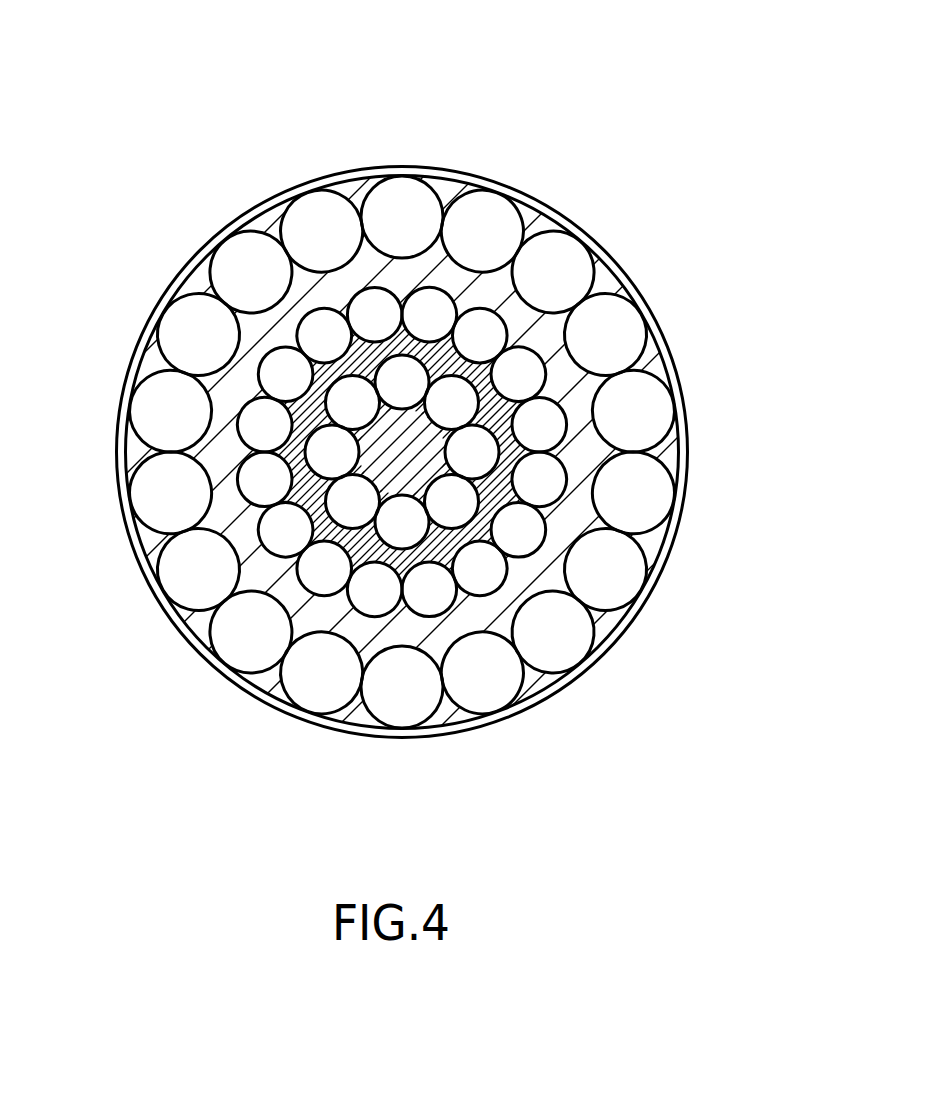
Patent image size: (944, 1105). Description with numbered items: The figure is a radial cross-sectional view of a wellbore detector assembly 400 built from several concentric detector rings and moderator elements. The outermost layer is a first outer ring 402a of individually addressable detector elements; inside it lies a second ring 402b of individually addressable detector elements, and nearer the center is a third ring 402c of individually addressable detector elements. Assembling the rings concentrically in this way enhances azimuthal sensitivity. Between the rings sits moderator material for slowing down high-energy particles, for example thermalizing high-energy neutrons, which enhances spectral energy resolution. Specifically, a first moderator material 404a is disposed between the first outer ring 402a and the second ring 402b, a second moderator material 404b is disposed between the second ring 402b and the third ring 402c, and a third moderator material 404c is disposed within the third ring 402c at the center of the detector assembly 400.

The detector assembly 400 is at (607, 144).
The first outer ring of individually addressable detector elements 402a is at (227, 262).
The second ring of individually addressable detector elements 402b is at (275, 380).
The third ring of individually addressable detector elements 402c is at (323, 460).
The first moderator material 404a is at (592, 433).
The second moderator material 404b is at (507, 453).
The third moderator material 404c is at (410, 453).